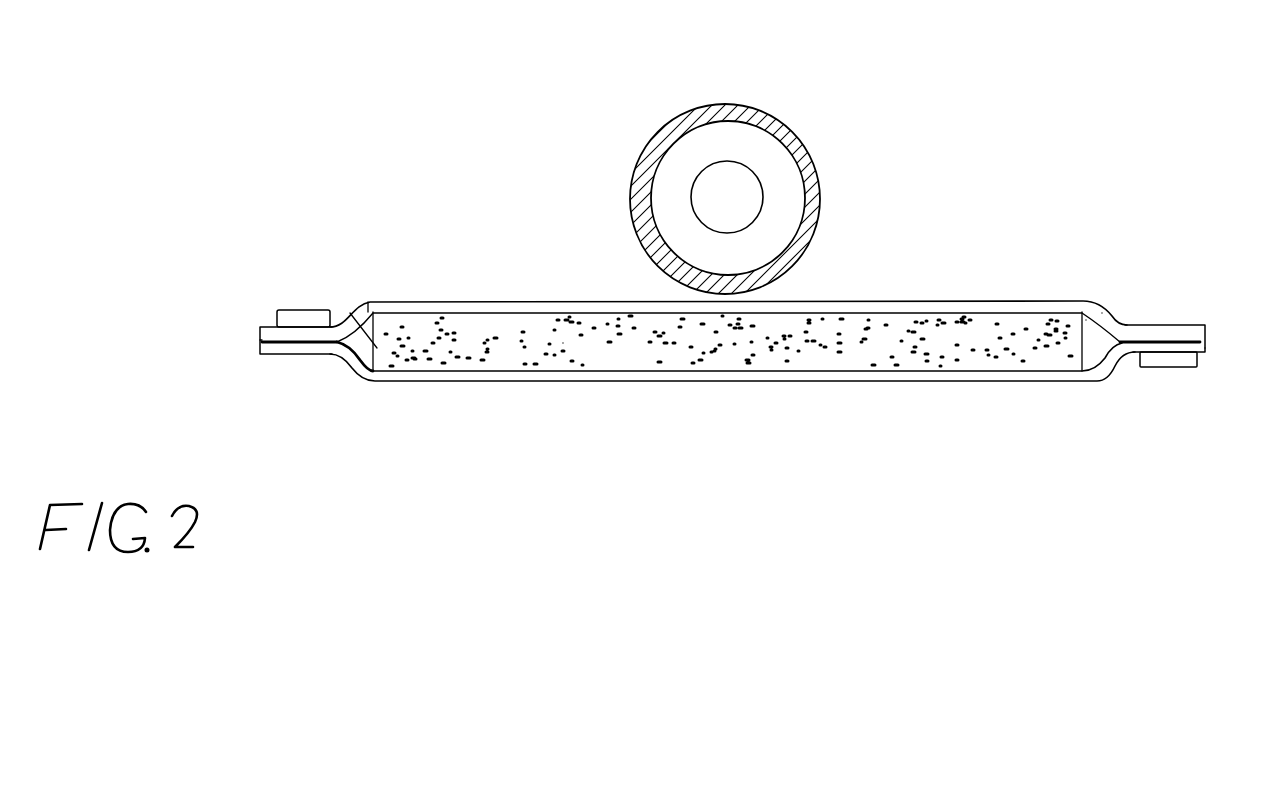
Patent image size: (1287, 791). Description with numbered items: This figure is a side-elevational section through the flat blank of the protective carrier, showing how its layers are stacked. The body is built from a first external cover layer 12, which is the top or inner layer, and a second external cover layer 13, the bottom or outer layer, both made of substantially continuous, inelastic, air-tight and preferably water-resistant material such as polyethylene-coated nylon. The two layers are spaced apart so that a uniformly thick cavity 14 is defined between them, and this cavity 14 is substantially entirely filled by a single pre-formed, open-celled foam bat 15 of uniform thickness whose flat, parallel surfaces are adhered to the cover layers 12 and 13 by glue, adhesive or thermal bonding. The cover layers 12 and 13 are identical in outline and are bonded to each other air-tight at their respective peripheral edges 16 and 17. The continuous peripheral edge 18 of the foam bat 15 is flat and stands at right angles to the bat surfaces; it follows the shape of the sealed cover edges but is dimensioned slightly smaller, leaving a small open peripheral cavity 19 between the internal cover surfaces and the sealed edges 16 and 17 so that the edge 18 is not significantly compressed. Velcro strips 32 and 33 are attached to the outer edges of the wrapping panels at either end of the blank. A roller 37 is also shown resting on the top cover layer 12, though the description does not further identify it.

The first external cover layer 12 is at (995, 230).
The second external cover layer 13 is at (950, 458).
The cavity 14 is at (480, 328).
The foam bat 15 is at (1124, 227).
The peripheral edge of first cover layer 16 is at (1193, 277).
The peripheral edge of second cover layer 17 is at (1255, 400).
The peripheral edge of foam bat 18 is at (350, 313).
The peripheral cavity 19 is at (1198, 195).
The Velcro strip 32 is at (292, 308).
The Velcro strip 33 is at (1185, 420).
The roller 37 is at (800, 58).